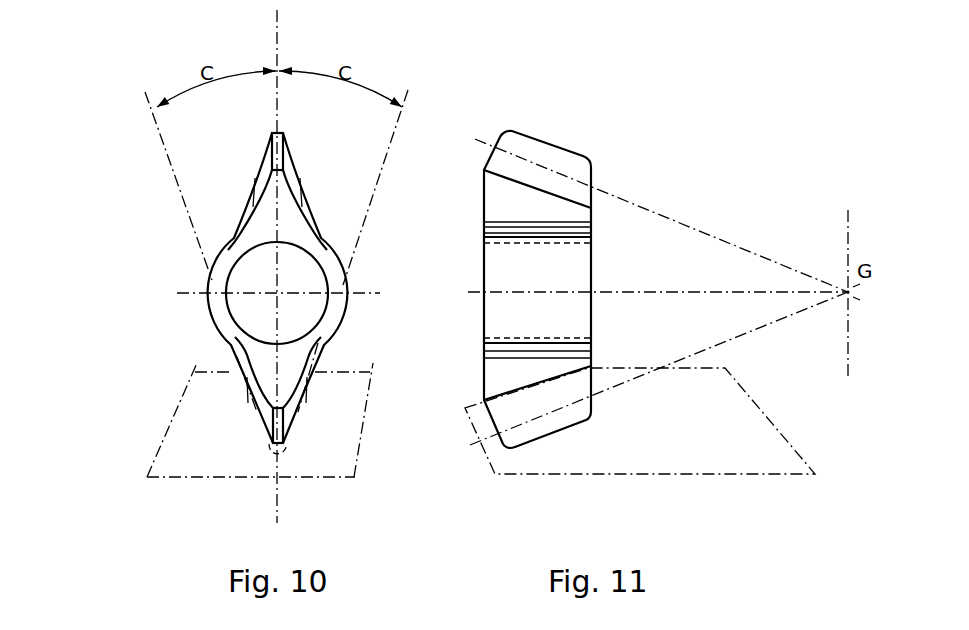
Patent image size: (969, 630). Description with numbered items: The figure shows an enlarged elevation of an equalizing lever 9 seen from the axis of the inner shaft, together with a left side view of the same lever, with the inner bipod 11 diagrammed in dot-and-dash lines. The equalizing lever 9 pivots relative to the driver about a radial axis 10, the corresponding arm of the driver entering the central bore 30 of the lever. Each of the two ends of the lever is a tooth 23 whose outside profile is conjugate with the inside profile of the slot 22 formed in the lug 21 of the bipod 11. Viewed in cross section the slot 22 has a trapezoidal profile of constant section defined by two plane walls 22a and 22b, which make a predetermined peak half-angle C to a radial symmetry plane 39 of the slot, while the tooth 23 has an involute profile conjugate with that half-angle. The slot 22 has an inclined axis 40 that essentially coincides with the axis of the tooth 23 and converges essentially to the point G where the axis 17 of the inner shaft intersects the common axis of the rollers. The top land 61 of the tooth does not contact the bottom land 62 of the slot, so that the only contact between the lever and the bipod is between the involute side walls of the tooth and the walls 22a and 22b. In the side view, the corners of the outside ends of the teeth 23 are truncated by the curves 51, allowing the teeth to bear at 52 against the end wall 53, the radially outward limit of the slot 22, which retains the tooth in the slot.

In FIG. 10, the equalizing lever 9 is at (218, 244).
In FIG. 11, the equalizing lever 9 is at (596, 250).
In FIG. 10, the radial axis 10 is at (273, 290).
In FIG. 11, the radial axis 10 is at (685, 290).
In FIG. 10, the bipod 11 is at (166, 484).
In FIG. 11, the bipod 11 is at (727, 486).
In FIG. 11, the axis of the inner shaft 17 is at (849, 350).
In FIG. 11, the lug 21 is at (528, 477).
In FIG. 10, the slot 22 is at (247, 389).
In FIG. 11, the slot 22 is at (604, 398).
In FIG. 10, the plane wall 22a is at (155, 122).
In FIG. 10, the plane wall 22b is at (394, 140).
In FIG. 10, the tooth 23 is at (255, 178).
In FIG. 11, the tooth 23 is at (529, 147).
In FIG. 10, the central bore 30 is at (254, 330).
In FIG. 11, the central bore 30 is at (528, 243).
In FIG. 10, the radial symmetry plane 39 is at (280, 22).
In FIG. 11, the inclined axis 40 is at (703, 230).
In FIG. 11, the curve 51 is at (503, 448).
In FIG. 11, the bearing point 52 is at (492, 420).
In FIG. 11, the end wall 53 is at (494, 408).
In FIG. 10, the top land 61 is at (272, 155).
In FIG. 11, the top land 61 is at (562, 148).
In FIG. 10, the bottom land 62 is at (284, 446).
In FIG. 11, the bottom land 62 is at (592, 415).